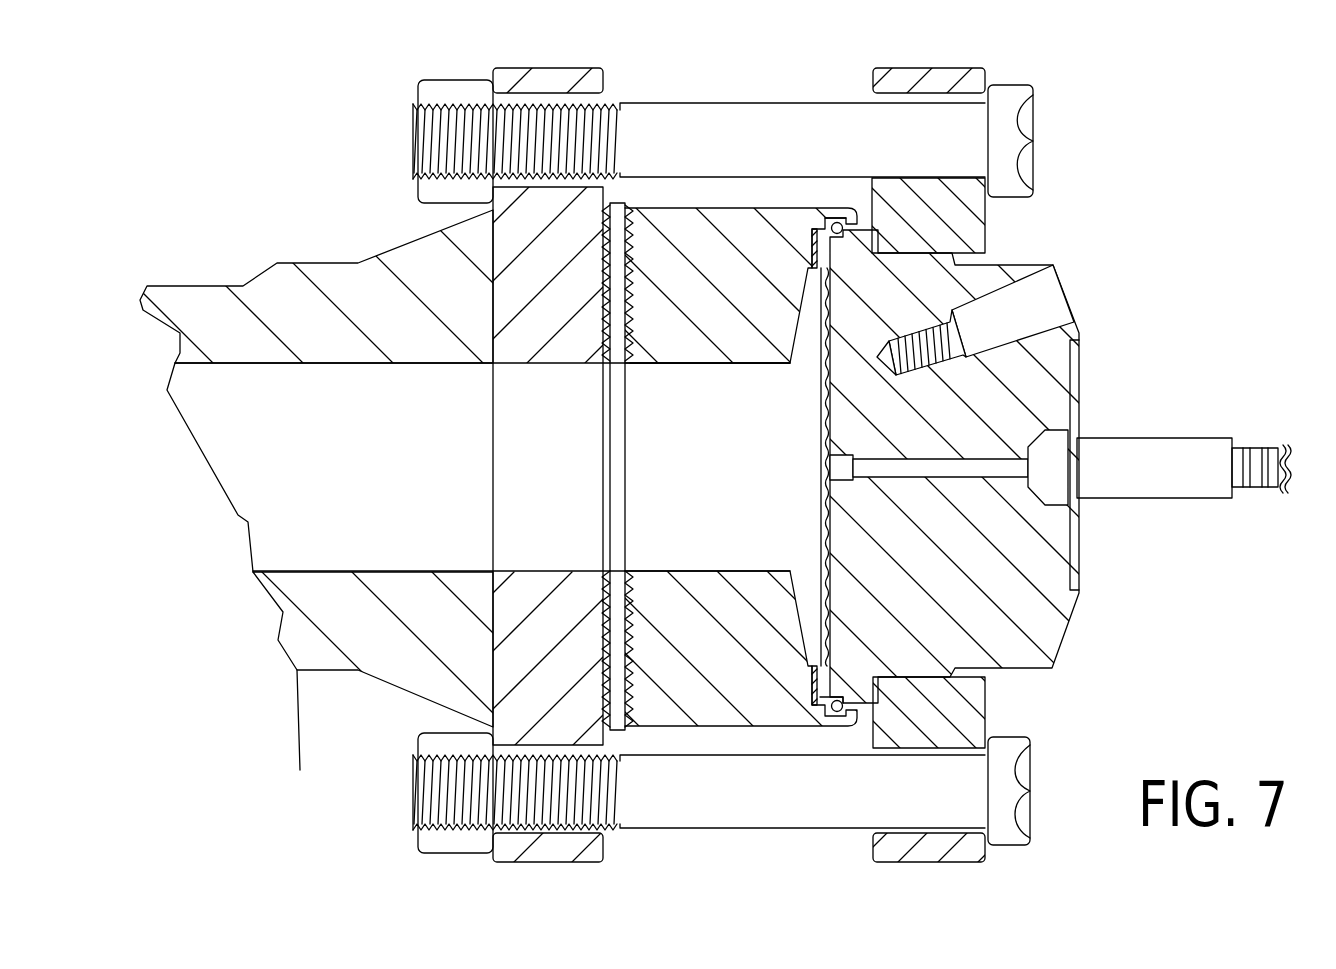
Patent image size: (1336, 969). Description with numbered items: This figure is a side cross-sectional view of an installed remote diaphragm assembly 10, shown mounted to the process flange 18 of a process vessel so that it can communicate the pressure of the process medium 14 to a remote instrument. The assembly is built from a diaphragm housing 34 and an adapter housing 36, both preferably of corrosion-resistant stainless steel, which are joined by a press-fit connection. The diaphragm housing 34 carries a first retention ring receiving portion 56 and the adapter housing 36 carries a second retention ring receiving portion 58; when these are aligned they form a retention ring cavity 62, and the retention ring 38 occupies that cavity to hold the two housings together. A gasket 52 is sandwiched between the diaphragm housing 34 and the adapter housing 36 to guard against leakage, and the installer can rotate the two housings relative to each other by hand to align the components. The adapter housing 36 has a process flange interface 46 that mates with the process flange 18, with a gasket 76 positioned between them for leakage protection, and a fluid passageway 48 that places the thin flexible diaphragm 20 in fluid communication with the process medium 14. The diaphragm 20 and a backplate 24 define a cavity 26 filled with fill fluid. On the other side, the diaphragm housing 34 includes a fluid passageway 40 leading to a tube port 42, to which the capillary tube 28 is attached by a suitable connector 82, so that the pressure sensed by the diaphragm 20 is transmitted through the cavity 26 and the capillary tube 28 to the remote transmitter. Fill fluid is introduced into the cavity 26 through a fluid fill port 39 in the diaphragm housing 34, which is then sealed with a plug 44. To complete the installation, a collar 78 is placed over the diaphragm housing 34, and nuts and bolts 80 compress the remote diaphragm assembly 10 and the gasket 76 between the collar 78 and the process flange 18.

The remote diaphragm assembly 10 is at (1140, 188).
The process medium 14 is at (509, 486).
The process flange 18 is at (396, 652).
The diaphragm 20 is at (825, 467).
The backplate 24 is at (830, 528).
The cavity 26 is at (829, 545).
The capillary tube 28 is at (1290, 470).
The diaphragm housing 34 is at (1026, 655).
The adapter housing 36 is at (742, 389).
The retention ring 38 is at (833, 697).
The fluid fill port 39 is at (1008, 320).
The fluid passageway 40 is at (958, 472).
The tube port 42 is at (1053, 478).
The plug 44 is at (906, 331).
The process flange interface 46 is at (634, 292).
The fluid passageway 48 is at (729, 386).
The gasket 52 is at (773, 467).
The first retention ring receiving portion 56 is at (837, 234).
The second retention ring receiving portion 58 is at (833, 208).
The retention ring cavity 62 is at (812, 694).
The gasket 76 is at (624, 466).
The collar 78 is at (950, 860).
The nuts and bolts 80 is at (805, 108).
The connector 82 is at (1206, 440).